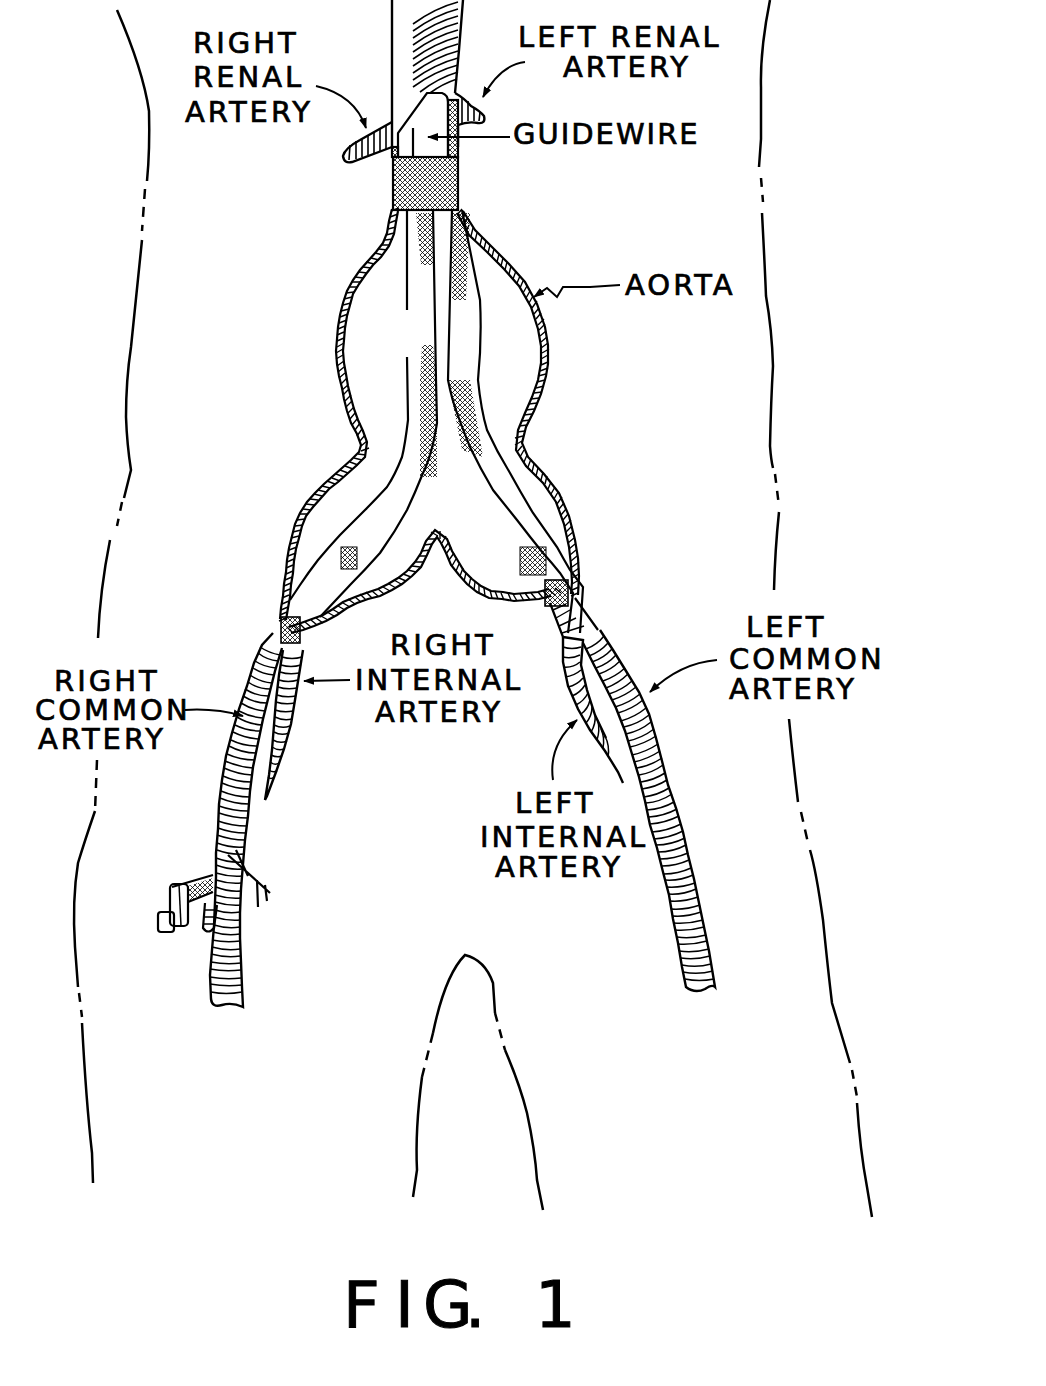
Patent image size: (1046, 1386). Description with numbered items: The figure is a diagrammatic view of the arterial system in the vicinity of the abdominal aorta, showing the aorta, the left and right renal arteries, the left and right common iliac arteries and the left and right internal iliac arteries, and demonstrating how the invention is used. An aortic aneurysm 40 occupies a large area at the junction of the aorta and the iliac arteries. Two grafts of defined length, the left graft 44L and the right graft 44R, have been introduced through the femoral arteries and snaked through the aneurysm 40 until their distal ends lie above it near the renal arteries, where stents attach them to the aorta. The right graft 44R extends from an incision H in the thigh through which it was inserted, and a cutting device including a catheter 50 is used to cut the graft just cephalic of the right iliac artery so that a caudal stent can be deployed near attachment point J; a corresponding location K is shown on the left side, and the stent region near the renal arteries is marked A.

The aortic aneurysm 40 is at (340, 381).
The right graft 44R is at (415, 372).
The left graft 44L is at (452, 318).
The catheter 50 is at (257, 883).
The proximal stent anchor A is at (470, 181).
The incision H is at (229, 864).
The attachment point J is at (277, 607).
The left iliac junction K is at (583, 585).